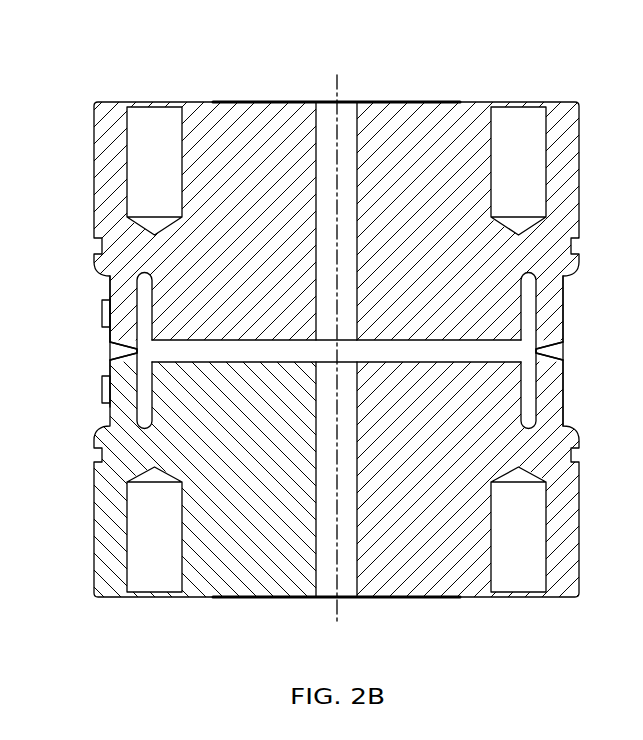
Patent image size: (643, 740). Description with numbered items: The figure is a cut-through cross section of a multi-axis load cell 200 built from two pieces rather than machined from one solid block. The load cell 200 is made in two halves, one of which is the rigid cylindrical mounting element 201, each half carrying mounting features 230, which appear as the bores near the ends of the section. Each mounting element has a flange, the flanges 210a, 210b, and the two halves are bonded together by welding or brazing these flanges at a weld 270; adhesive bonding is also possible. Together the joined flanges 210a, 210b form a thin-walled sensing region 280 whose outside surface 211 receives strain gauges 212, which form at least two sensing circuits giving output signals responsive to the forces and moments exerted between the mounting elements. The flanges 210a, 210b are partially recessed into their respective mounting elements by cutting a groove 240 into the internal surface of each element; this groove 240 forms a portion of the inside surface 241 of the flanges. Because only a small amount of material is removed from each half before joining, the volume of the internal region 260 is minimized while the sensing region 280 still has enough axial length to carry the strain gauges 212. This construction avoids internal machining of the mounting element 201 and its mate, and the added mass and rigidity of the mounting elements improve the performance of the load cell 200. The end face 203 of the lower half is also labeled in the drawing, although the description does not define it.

The multi-axis load cell 200 is at (83, 68).
The mounting element 201 is at (260, 120).
The second end face 203 is at (272, 582).
The flange 210a is at (552, 323).
The flange 210b is at (552, 404).
The outside surface 211 is at (563, 379).
The strain gauges 212 is at (101, 300).
The mounting features 230 is at (150, 120).
The groove 240 is at (531, 298).
The inside surface 241 is at (128, 290).
The internal region 260 is at (458, 352).
The weld 270 is at (563, 351).
The sensing region 280 is at (83, 298).